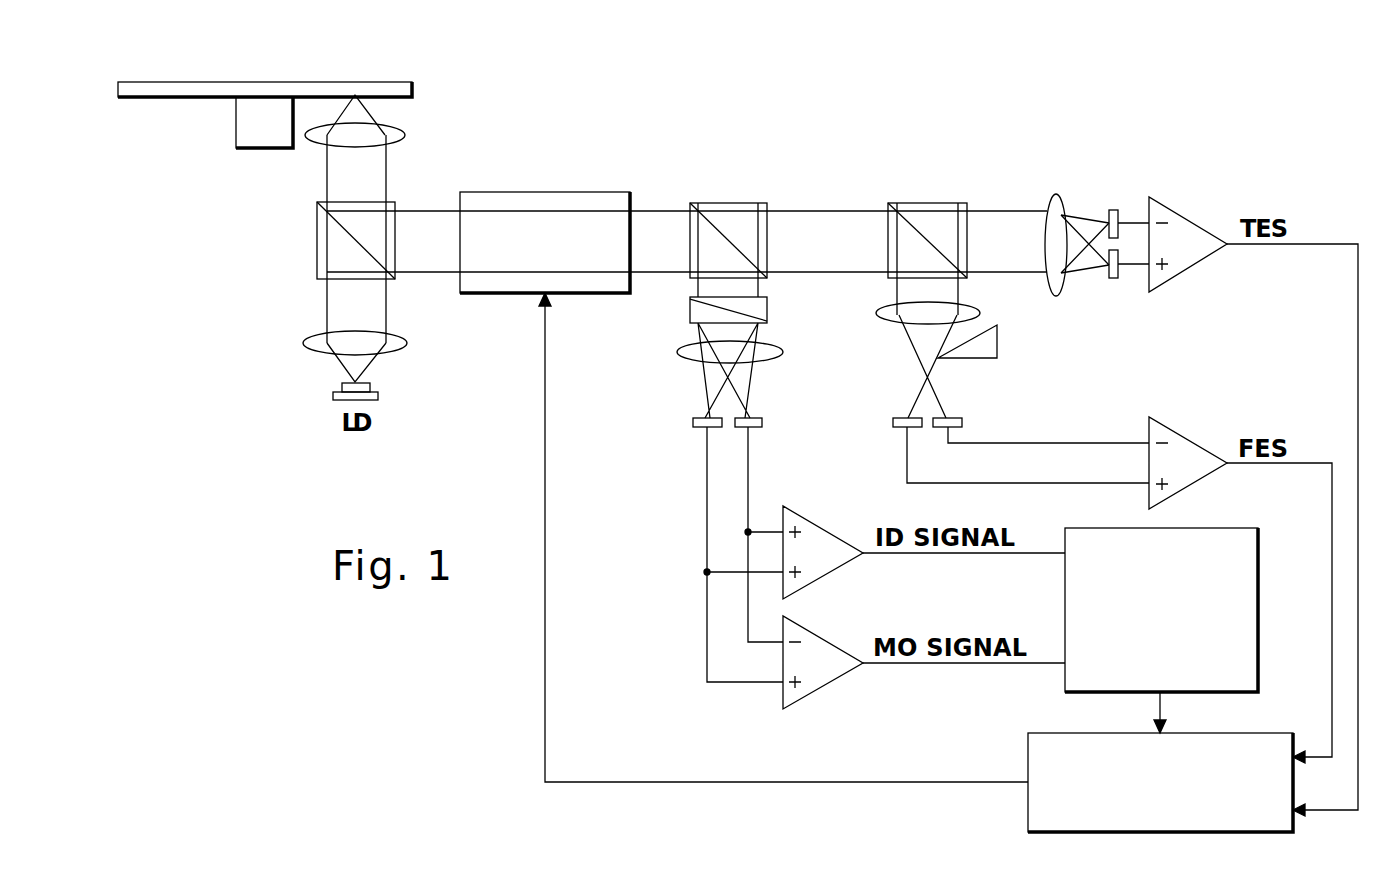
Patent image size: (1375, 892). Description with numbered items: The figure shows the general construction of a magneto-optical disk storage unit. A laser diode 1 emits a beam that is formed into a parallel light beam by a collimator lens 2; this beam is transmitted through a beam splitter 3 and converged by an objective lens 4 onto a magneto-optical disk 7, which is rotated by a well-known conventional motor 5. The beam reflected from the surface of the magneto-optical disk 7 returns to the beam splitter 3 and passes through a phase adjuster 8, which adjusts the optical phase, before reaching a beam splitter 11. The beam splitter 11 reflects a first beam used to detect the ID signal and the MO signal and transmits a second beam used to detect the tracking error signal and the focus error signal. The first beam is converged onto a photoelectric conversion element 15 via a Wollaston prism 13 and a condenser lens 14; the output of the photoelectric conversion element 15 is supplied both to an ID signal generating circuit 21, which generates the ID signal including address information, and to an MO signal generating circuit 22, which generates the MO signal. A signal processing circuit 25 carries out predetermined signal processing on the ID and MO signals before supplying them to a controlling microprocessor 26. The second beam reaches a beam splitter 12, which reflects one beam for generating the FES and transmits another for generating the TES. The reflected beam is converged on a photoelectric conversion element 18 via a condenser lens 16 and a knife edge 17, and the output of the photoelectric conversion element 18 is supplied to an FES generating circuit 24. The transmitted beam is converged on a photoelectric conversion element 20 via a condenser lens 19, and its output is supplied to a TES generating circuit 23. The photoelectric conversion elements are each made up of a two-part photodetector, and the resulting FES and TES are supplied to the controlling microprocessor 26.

The laser diode 1 is at (378, 397).
The collimator lens 2 is at (303, 343).
The beam splitter 3 is at (317, 233).
The objective lens 4 is at (405, 135).
The motor 5 is at (267, 150).
The magneto-optical disk 7 is at (412, 88).
The phase adjuster 8 is at (535, 192).
The beam splitter 11 is at (740, 203).
The beam splitter 12 is at (930, 203).
The Wollaston prism 13 is at (767, 310).
The condenser lens 14 is at (783, 352).
The photoelectric conversion element 15 is at (762, 422).
The condenser lens 16 is at (980, 313).
The knife edge 17 is at (997, 352).
The photoelectric conversion element 18 is at (962, 420).
The condenser lens 19 is at (1057, 194).
The photoelectric conversion element 20 is at (1114, 210).
The identification (ID) signal generating circuit 21 is at (818, 525).
The magneto-optical (MO) signal generating circuit 22 is at (835, 680).
The tracking error signal (TES) generating circuit 23 is at (1192, 222).
The focus error signal (FES) generating circuit 24 is at (1182, 437).
The signal processing circuit 25 is at (1258, 595).
The controlling microprocessor 26 is at (1250, 832).